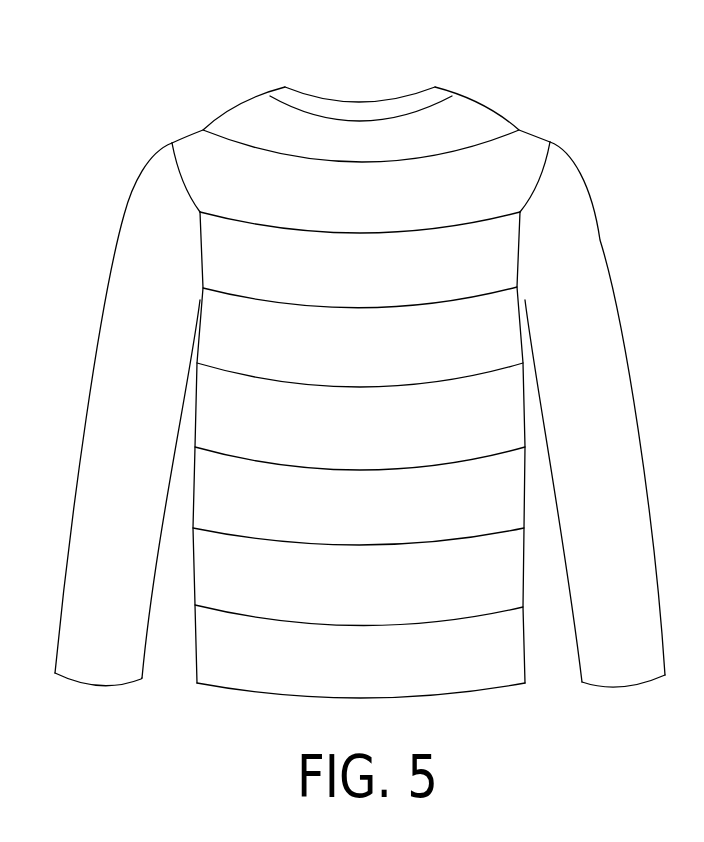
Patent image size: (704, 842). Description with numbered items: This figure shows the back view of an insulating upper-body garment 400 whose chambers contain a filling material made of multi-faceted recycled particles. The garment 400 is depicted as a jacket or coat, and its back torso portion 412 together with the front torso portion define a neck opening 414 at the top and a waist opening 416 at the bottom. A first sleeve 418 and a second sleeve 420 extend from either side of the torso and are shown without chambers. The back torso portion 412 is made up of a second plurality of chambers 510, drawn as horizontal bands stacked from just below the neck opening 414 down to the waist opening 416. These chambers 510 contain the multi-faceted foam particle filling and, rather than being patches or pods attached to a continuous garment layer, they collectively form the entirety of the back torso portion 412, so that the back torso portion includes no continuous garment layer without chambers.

The upper-body garment 400 is at (100, 98).
The back torso portion 412 is at (485, 165).
The neck opening 414 is at (357, 70).
The waist opening 416 is at (245, 714).
The first sleeve 418 is at (617, 403).
The second sleeve 420 is at (105, 403).
The second plurality of chambers 510 is at (212, 413).